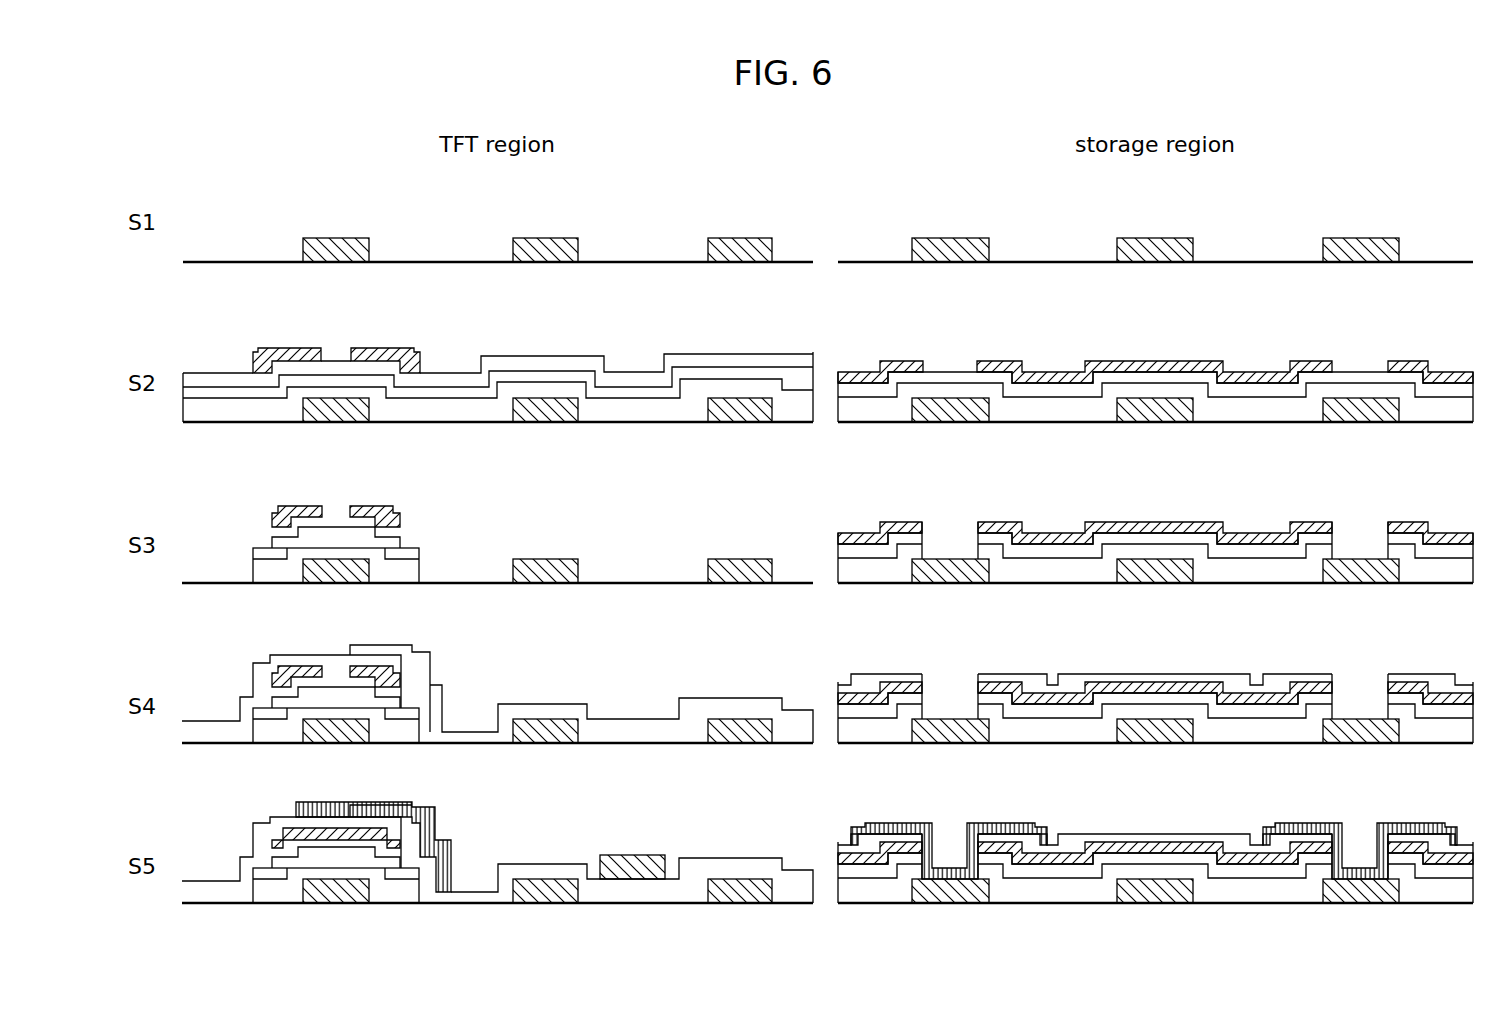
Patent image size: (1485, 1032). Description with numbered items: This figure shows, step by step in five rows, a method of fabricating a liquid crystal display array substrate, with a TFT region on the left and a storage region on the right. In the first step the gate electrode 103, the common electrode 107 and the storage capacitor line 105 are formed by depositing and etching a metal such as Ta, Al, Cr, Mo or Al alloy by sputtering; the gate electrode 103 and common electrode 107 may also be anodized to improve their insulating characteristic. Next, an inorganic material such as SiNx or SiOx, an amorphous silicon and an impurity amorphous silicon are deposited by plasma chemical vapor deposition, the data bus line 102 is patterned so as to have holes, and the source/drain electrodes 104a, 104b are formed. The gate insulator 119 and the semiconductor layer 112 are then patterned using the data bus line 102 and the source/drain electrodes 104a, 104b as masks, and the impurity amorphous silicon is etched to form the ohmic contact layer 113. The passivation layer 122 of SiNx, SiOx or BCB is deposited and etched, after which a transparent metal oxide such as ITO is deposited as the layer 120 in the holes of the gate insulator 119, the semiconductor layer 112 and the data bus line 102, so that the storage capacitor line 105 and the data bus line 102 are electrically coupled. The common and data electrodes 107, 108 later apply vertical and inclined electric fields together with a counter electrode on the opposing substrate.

The data bus line 102 is at (1208, 363).
The gate electrode 103 is at (347, 244).
The source electrode 104a is at (288, 349).
The drain electrode 104b is at (376, 349).
The storage capacitor line 105 is at (971, 244).
The common electrode 107 is at (563, 244).
The data electrode 108 is at (642, 859).
The semiconductor layer 112 is at (750, 369).
The ohmic contact layer 113 is at (553, 357).
The gate insulator 119 is at (637, 410).
The pixel electrode 120 is at (443, 842).
The passivation layer 122 is at (542, 711).